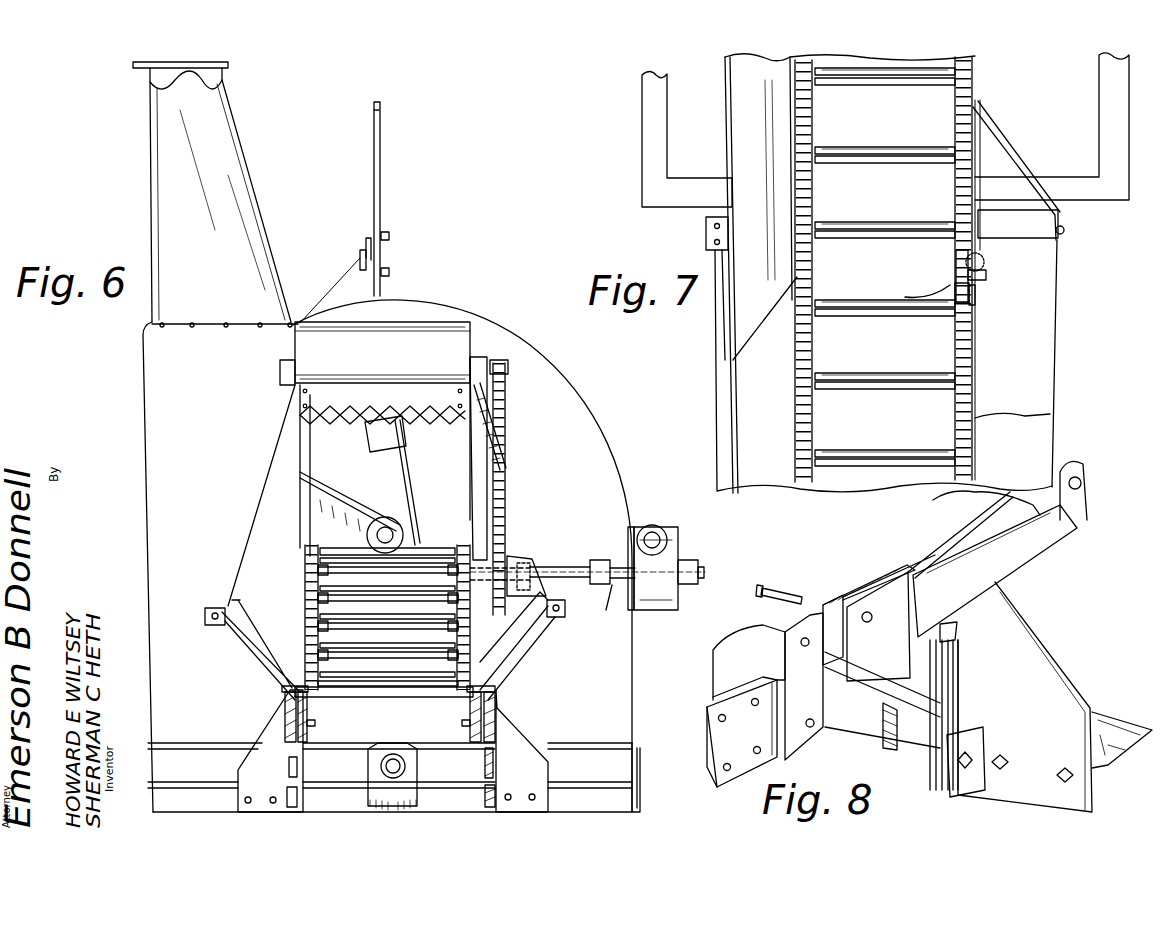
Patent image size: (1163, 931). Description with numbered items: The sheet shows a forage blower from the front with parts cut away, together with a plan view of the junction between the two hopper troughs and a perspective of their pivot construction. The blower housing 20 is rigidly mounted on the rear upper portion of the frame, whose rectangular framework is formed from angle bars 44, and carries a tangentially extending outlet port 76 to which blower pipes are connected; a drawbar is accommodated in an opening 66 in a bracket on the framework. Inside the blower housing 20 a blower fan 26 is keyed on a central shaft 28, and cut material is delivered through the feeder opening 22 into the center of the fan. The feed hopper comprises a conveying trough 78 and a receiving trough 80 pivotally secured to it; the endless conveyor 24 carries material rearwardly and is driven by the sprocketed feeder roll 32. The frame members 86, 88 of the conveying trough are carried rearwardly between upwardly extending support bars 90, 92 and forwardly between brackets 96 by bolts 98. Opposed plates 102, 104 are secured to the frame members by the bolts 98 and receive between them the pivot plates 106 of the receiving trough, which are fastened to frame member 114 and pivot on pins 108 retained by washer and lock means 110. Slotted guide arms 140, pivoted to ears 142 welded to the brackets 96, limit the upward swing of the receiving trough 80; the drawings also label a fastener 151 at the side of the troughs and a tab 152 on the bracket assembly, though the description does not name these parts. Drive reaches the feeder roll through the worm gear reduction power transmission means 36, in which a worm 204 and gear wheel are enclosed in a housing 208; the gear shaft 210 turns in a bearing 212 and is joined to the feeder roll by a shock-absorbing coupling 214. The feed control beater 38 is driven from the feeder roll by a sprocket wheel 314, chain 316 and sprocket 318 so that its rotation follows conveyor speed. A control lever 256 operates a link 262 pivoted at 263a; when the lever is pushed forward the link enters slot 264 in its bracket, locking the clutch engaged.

In FIG. 6, the blower housing 20 is at (555, 393).
In FIG. 6, the feeder opening 22 is at (318, 450).
In FIG. 6, the endless conveyor 24 is at (306, 606).
In FIG. 6, the blower fan 26 is at (456, 473).
In FIG. 6, the central shaft 28 is at (392, 540).
In FIG. 6, the sprocketed feeder roll 32 is at (503, 565).
In FIG. 6, the worm gear reduction power transmission means 36 is at (679, 516).
In FIG. 6, the feed control beater 38 is at (444, 318).
In FIG. 8, the angle bars 44 is at (1112, 722).
In FIG. 6, the opening 66 is at (393, 780).
In FIG. 6, the outlet port 76 is at (228, 117).
In FIG. 7, the conveying trough 78 is at (724, 127).
In FIG. 7, the receiving trough 80 is at (727, 444).
In FIG. 6, the frame members 86 is at (315, 724).
In FIG. 6, the frame members 88 is at (313, 690).
In FIG. 7, the frame members 88 is at (970, 288).
In FIG. 6, the support bar 90 is at (280, 368).
In FIG. 6, the support bar 92 is at (485, 360).
In FIG. 8, the brackets 96 is at (1050, 652).
In FIG. 8, the bolts 98 is at (960, 632).
In FIG. 8, the plates 102 is at (866, 600).
In FIG. 8, the plates 104 is at (836, 600).
In FIG. 7, the pivot plates 106 is at (969, 305).
In FIG. 8, the pivot plates 106 is at (792, 650).
In FIG. 7, the pins 108 is at (985, 262).
In FIG. 8, the pins 108 is at (776, 586).
In FIG. 6, the washer and lock means 110 is at (498, 705).
In FIG. 7, the washer and lock means 110 is at (987, 275).
In FIG. 7, the frame member 114 is at (975, 318).
In FIG. 6, the slotted guide arms 140 is at (494, 770).
In FIG. 8, the slotted guide arms 140 is at (917, 752).
In FIG. 8, the ears 142 is at (964, 790).
In FIG. 6, the bolt 151 is at (215, 625).
In FIG. 7, the bolt 151 is at (1065, 231).
In FIG. 8, the tab 152 is at (1085, 495).
In FIG. 6, the worm 204 is at (672, 535).
In FIG. 6, the housing 208 is at (685, 585).
In FIG. 6, the shaft 210 is at (612, 608).
In FIG. 6, the bearing 212 is at (617, 562).
In FIG. 6, the coupling 214 is at (555, 570).
In FIG. 6, the control lever 256 is at (380, 157).
In FIG. 6, the link 262 is at (358, 237).
In FIG. 6, the pivot 263a is at (389, 238).
In FIG. 6, the slot 264 is at (362, 258).
In FIG. 6, the sprocket wheel 314 is at (511, 555).
In FIG. 6, the chain 316 is at (504, 455).
In FIG. 6, the sprocket 318 is at (505, 372).